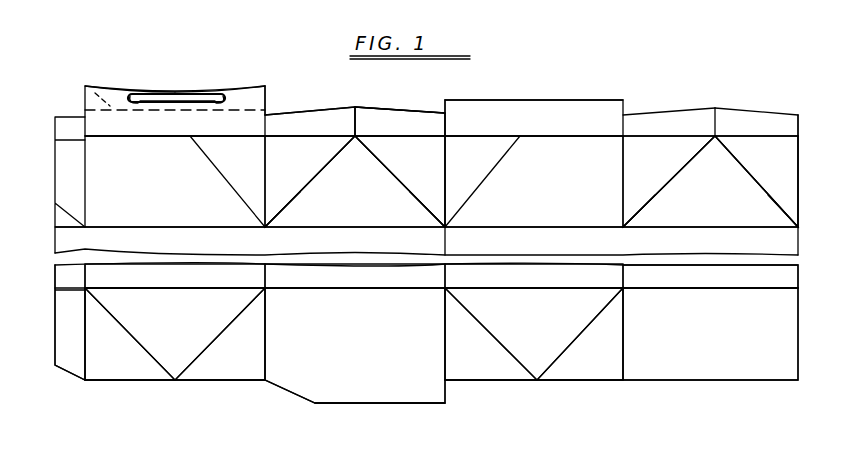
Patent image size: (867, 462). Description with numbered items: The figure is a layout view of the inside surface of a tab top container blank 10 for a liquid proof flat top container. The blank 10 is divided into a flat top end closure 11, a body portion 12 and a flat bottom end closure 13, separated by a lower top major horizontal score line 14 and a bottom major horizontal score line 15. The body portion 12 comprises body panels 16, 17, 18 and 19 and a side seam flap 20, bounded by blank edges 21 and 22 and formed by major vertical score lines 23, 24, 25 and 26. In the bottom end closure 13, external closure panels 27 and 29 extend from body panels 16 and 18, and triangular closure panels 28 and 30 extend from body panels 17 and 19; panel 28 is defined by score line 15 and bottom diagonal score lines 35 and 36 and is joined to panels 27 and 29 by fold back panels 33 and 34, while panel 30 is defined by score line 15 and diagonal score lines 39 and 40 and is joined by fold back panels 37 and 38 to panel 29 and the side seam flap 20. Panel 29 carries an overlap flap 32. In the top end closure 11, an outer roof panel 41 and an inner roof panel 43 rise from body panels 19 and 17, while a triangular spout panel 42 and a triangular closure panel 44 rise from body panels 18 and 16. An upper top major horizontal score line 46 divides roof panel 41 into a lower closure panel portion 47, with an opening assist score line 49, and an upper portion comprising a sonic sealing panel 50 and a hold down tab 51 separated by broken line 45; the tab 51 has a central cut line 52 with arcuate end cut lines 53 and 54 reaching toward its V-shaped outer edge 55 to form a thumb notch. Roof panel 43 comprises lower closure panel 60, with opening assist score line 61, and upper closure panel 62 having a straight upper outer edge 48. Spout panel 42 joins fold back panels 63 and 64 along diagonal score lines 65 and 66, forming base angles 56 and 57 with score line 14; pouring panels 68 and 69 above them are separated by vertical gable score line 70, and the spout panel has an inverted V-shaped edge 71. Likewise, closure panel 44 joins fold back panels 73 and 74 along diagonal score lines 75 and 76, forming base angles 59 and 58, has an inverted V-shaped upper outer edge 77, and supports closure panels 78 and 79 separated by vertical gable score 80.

The tab top container blank 10 is at (322, 108).
The flat top end closure 11 is at (210, 86).
The body portion 12 is at (800, 229).
The flat bottom end closure 13 is at (448, 408).
The lower top major horizontal score line 14 is at (182, 230).
The bottom major horizontal score line 15 is at (230, 289).
The body panel 16 is at (710, 275).
The body panel 17 is at (534, 275).
The body panel 18 is at (355, 275).
The body panel 19 is at (175, 274).
The side seam flap 20 is at (62, 285).
The blank edge 21 is at (799, 182).
The blank edge 22 is at (55, 147).
The major vertical score line 23 is at (623, 280).
The major vertical score line 24 is at (448, 278).
The major vertical score line 25 is at (266, 272).
The major vertical score line 26 is at (88, 275).
The external closure panel 27 is at (710, 334).
The triangular closure panel 28 is at (534, 334).
The external closure panel 29 is at (355, 345).
The triangular closure panel 30 is at (175, 334).
The overlap flap 32 is at (383, 395).
The fold back panel 33 is at (580, 334).
The fold back panel 34 is at (491, 334).
The bottom diagonal score line 35 is at (586, 322).
The bottom diagonal score line 36 is at (524, 350).
The fold back panel 37 is at (220, 334).
The fold back panel 38 is at (130, 334).
The bottom diagonal score line 39 is at (236, 318).
The bottom diagonal score line 40 is at (150, 353).
The outer roof panel 41 is at (104, 85).
The triangular spout panel 42 is at (355, 181).
The inner roof panel 43 is at (516, 100).
The triangular closure panel 44 is at (752, 207).
The broken line 45 is at (150, 92).
The upper top major horizontal score line 46 is at (77, 136).
The lower closure panel portion 47 is at (175, 181).
The upper outer edge 48 is at (573, 100).
The opening assist score line 49 is at (218, 170).
The sonic sealing panel 50 is at (175, 111).
The sealing hold down tab 51 is at (268, 100).
The central straight major long cut line 52 is at (190, 100).
The end cut line 53 is at (222, 98).
The end cut line 54 is at (135, 94).
The V-shaped outer edge 55 is at (253, 99).
The triangular base angle 56 is at (292, 212).
The triangular base angle 57 is at (418, 228).
The triangular base angle 58 is at (778, 208).
The triangular base angle 59 is at (653, 210).
The lower closure panel 60 is at (534, 181).
The opening assist score line 61 is at (509, 168).
The upper closure panel 62 is at (534, 118).
The fold back panel 63 is at (310, 181).
The fold back panel 64 is at (400, 181).
The diagonal score line 65 is at (322, 176).
The diagonal score line 66 is at (402, 190).
The pouring panel 68 is at (310, 121).
The pouring panel 69 is at (400, 121).
The vertical gable score line 70 is at (356, 112).
The inverted V-shaped edge 71 is at (402, 108).
The fold back panel 73 is at (669, 181).
The fold back panel 74 is at (756, 181).
The diagonal score line 75 is at (688, 172).
The diagonal score line 76 is at (748, 178).
The upper outer edge 77 is at (754, 112).
The closure panel 78 is at (701, 117).
The closure panel 79 is at (797, 125).
The vertical gable score 80 is at (717, 120).